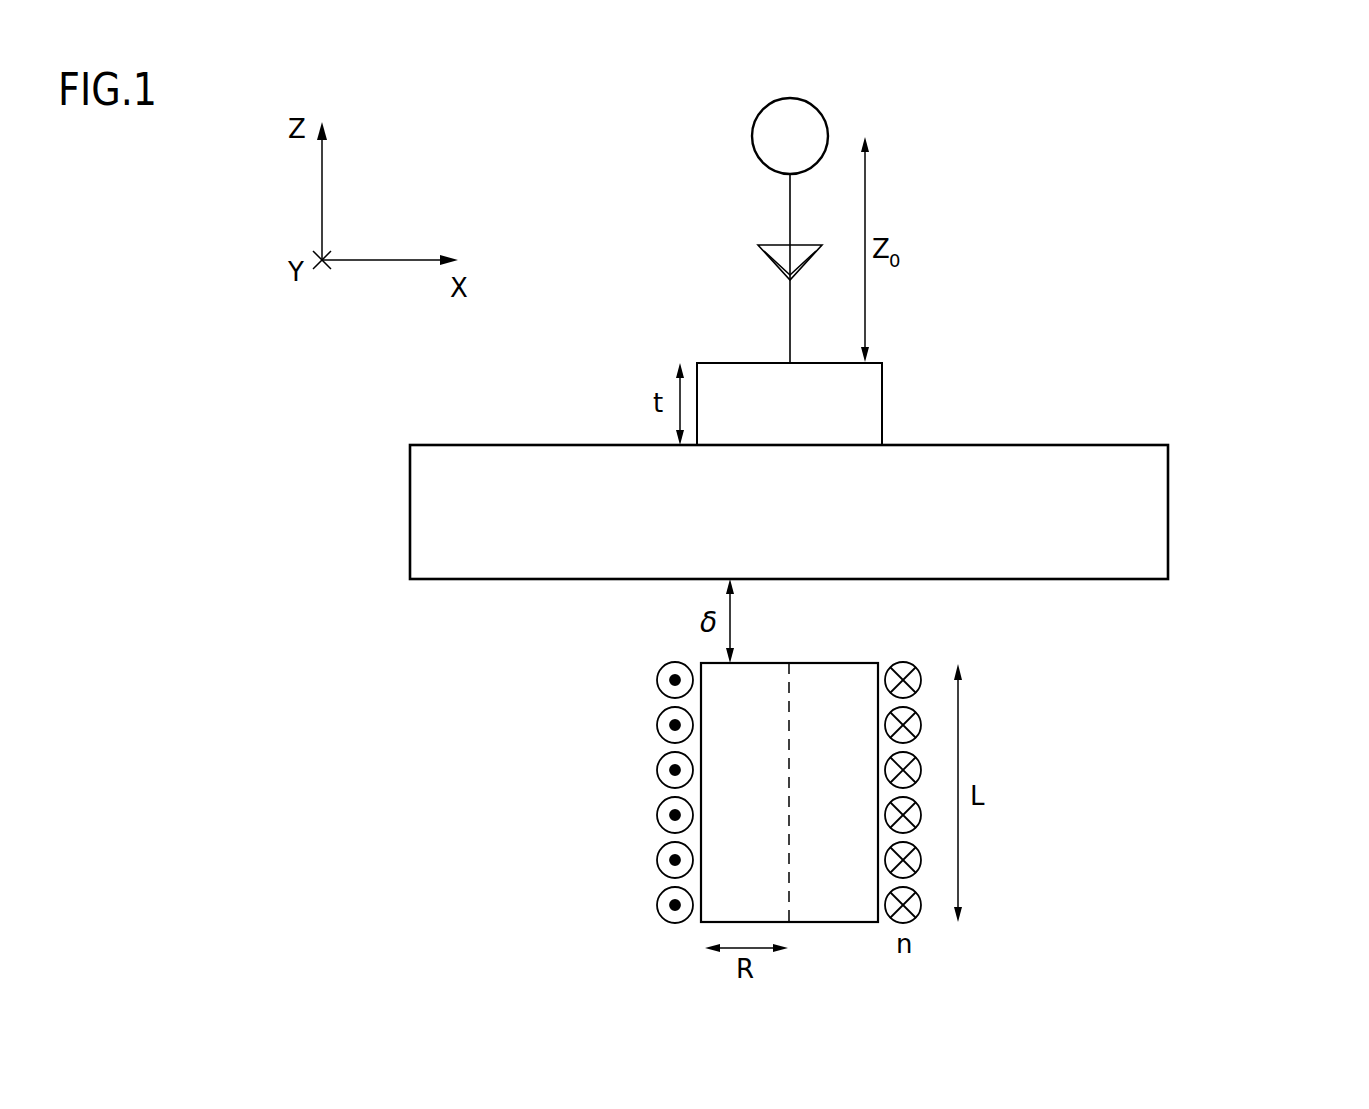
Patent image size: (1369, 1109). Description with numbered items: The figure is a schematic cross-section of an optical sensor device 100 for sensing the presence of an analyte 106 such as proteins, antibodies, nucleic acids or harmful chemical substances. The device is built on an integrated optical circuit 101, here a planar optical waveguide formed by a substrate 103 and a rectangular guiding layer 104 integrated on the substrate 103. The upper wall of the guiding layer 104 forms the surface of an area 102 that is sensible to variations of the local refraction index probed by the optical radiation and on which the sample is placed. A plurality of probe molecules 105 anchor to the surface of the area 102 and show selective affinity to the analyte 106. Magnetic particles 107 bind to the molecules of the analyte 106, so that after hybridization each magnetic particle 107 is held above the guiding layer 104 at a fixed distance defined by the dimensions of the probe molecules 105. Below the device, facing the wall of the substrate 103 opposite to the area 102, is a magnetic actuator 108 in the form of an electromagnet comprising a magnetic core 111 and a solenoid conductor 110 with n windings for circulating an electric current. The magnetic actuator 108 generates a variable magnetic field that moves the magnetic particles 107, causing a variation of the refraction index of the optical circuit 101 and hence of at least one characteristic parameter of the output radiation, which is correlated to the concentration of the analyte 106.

The optical sensor device 100 is at (1342, 198).
The integrated optical circuit 101 is at (1183, 401).
The area sensible to variations of local refraction index 102 is at (722, 363).
The substrate 103 is at (811, 525).
The guiding layer 104 is at (811, 418).
The probe molecules 105 is at (789, 330).
The analyte 106 is at (773, 243).
The magnetic particles 107 is at (771, 136).
The magnetic actuator 108 is at (644, 805).
The solenoid conductor 110 is at (903, 665).
The magnetic core 111 is at (768, 800).